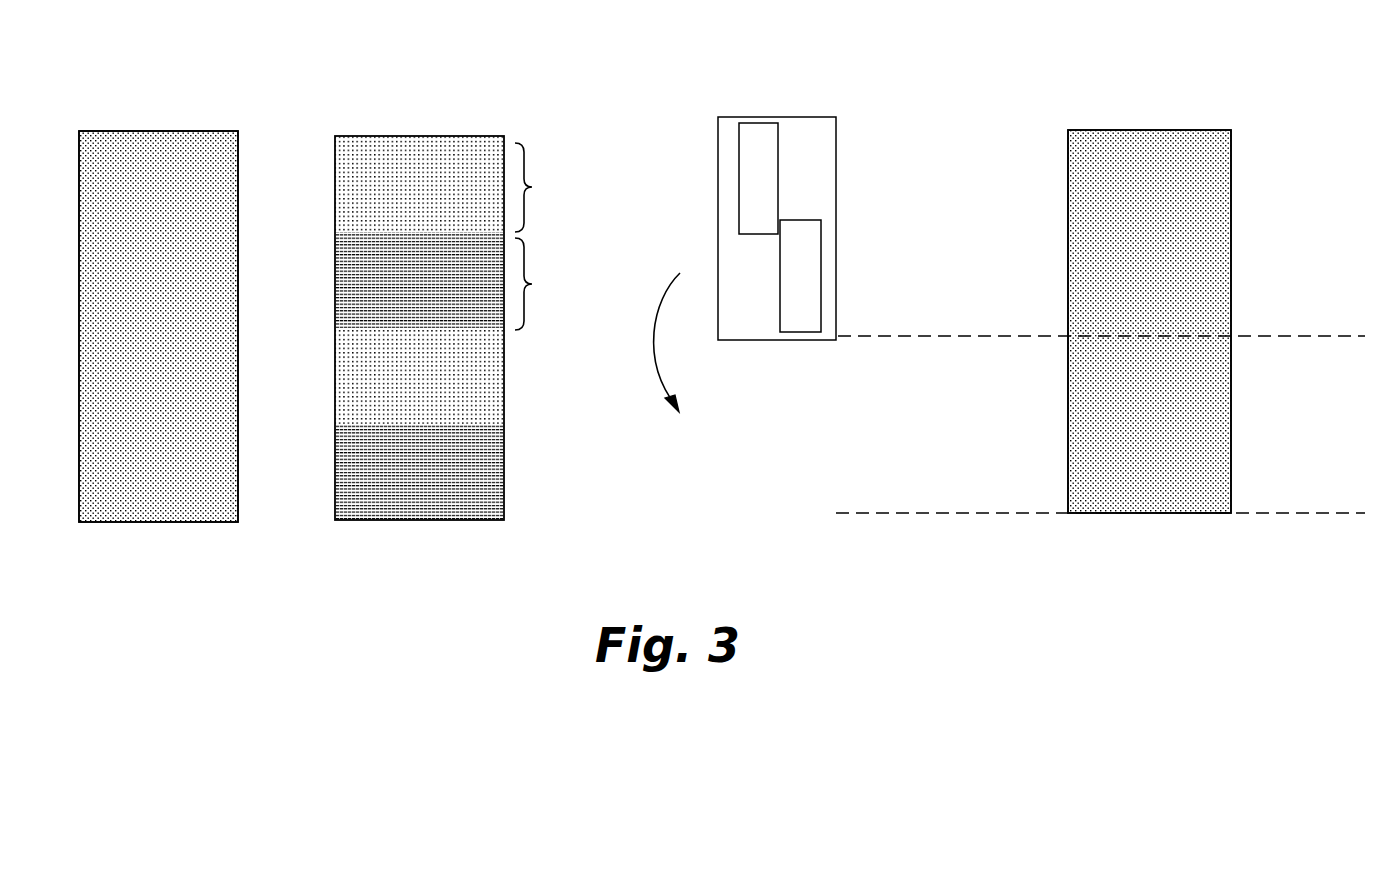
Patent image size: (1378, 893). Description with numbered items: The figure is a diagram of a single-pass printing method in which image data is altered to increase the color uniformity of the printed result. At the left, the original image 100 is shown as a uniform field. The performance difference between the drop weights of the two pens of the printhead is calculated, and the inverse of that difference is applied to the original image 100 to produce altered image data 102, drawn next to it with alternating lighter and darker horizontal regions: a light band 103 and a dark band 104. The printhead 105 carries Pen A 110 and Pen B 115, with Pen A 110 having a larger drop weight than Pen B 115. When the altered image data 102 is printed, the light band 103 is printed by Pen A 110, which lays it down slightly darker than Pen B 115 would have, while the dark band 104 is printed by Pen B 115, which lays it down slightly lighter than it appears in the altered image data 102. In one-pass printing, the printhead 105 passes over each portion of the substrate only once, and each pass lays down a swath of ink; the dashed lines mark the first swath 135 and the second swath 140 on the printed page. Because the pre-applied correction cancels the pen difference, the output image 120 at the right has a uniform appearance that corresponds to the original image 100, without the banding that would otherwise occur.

The original image 100 is at (162, 131).
The altered image data 102 is at (422, 129).
The light band 103 is at (491, 184).
The dark band 104 is at (491, 281).
The printhead 105 is at (820, 123).
The Pen A 110 is at (757, 127).
The Pen B 115 is at (803, 322).
The output image 120 is at (1137, 130).
The first swath 135 is at (1101, 307).
The second swath 140 is at (1100, 484).